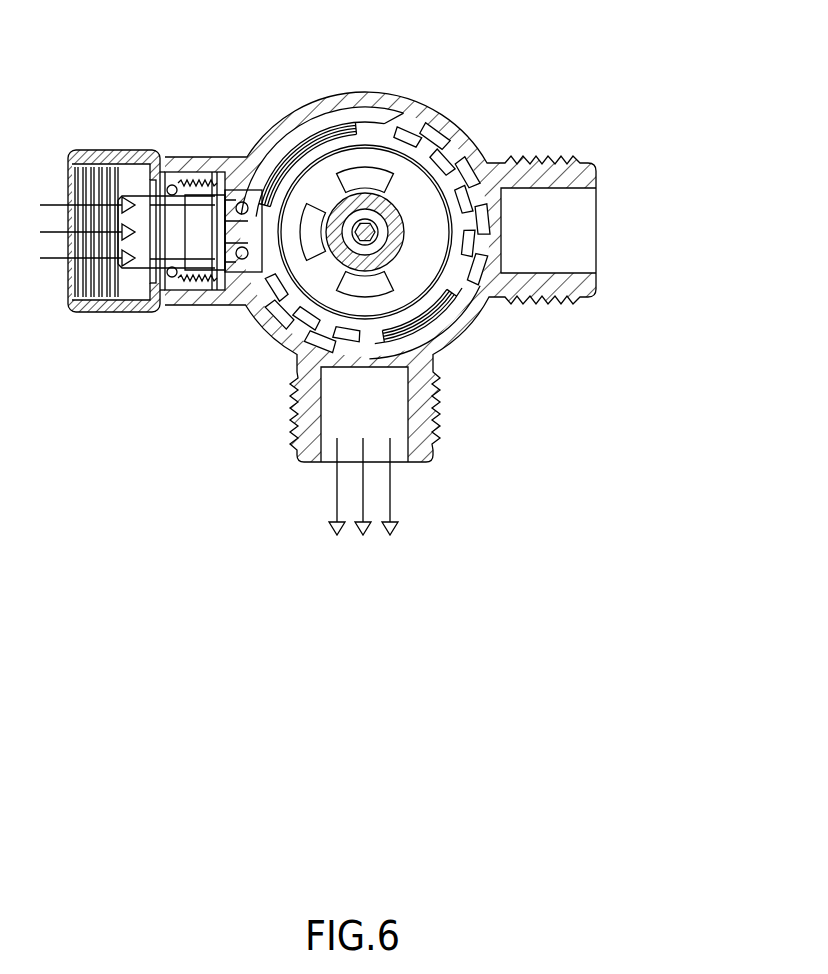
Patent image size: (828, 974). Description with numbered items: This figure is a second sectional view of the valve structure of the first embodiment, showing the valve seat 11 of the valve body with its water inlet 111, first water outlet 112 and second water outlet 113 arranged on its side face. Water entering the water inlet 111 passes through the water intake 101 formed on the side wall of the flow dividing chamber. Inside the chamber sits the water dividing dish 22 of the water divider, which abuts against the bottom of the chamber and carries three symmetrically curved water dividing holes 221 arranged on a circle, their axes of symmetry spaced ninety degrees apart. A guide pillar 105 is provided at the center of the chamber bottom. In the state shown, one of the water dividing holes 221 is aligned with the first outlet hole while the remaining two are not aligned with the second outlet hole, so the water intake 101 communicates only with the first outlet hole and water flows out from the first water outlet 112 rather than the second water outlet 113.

The valve seat 11 is at (370, 103).
The water inlet 111 is at (162, 153).
The water intake 101 is at (201, 220).
The second water outlet 113 is at (568, 223).
The first water outlet 112 is at (377, 428).
The water dividing dish 22 is at (366, 224).
The water dividing holes 221 is at (365, 172).
The guide pillar 105 is at (380, 238).